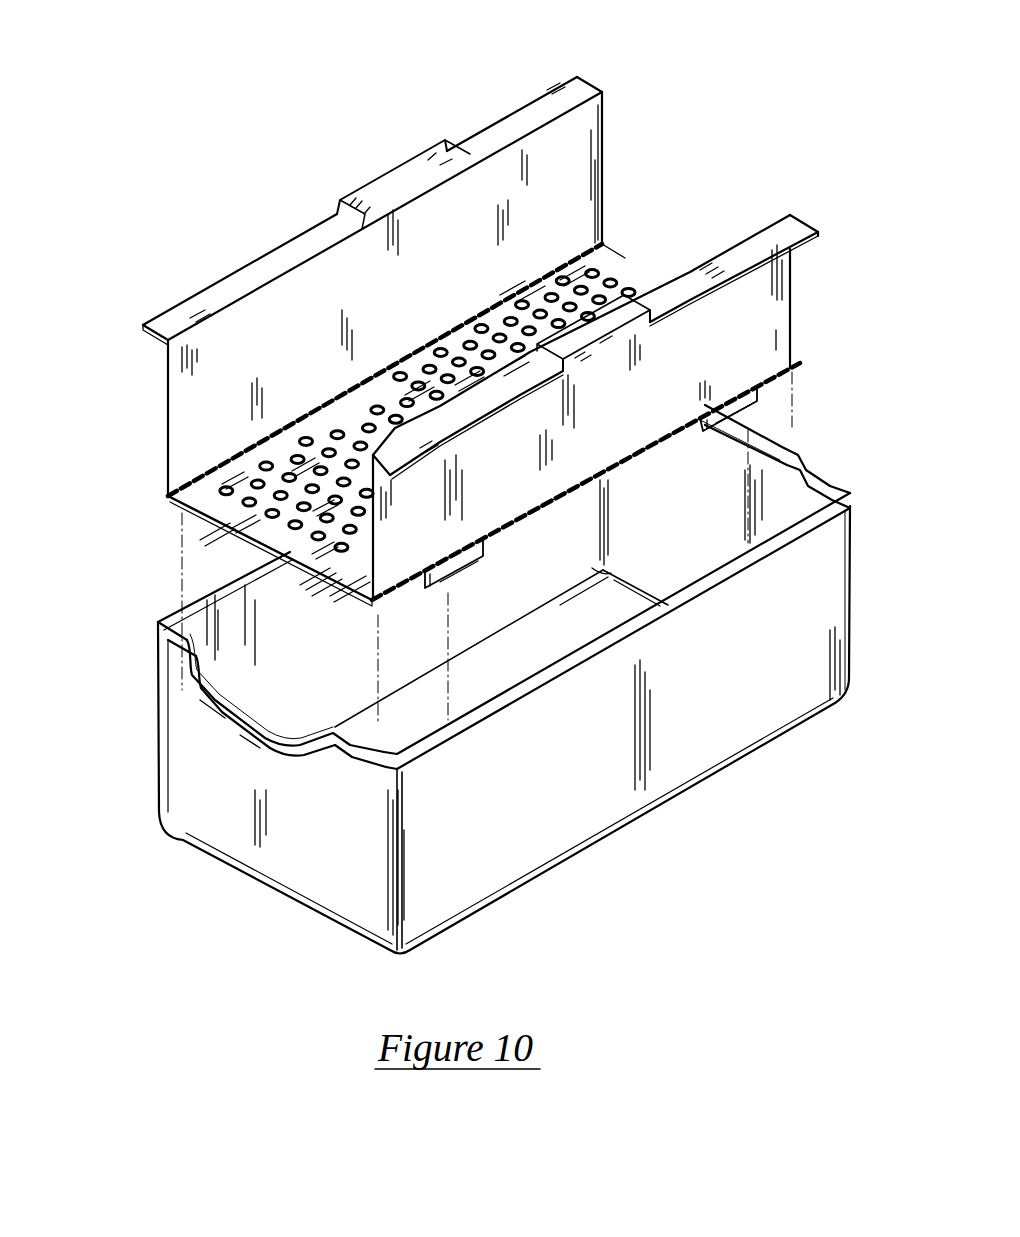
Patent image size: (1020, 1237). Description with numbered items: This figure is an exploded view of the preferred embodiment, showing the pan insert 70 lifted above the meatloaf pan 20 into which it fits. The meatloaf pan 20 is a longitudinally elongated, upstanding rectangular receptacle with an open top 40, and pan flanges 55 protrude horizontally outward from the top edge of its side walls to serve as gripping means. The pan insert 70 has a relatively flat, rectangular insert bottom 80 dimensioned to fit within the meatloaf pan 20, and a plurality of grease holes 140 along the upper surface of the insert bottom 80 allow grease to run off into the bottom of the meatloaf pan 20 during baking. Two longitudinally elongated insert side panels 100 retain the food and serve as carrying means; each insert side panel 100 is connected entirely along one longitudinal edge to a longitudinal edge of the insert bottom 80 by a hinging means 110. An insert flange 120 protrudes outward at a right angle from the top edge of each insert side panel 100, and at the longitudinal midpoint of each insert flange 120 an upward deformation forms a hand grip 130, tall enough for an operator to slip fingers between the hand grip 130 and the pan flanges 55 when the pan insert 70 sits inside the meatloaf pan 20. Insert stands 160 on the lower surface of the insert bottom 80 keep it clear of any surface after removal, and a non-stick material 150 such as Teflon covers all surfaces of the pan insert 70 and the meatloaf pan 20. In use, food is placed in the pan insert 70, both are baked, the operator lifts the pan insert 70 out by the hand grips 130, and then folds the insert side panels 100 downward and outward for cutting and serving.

The meatloaf pan 20 is at (553, 843).
The open top 40 is at (790, 550).
The pan flanges 55 is at (235, 708).
The pan insert 70 is at (605, 92).
The insert bottom 80 is at (297, 552).
The insert side panels 100 is at (606, 150).
The hinging means 110 is at (167, 496).
The insert flange 120 is at (146, 325).
The hand grip 130 is at (387, 180).
The grease holes 140 is at (228, 503).
The non-stick material 150 is at (273, 582).
The insert stand 160 is at (770, 398).